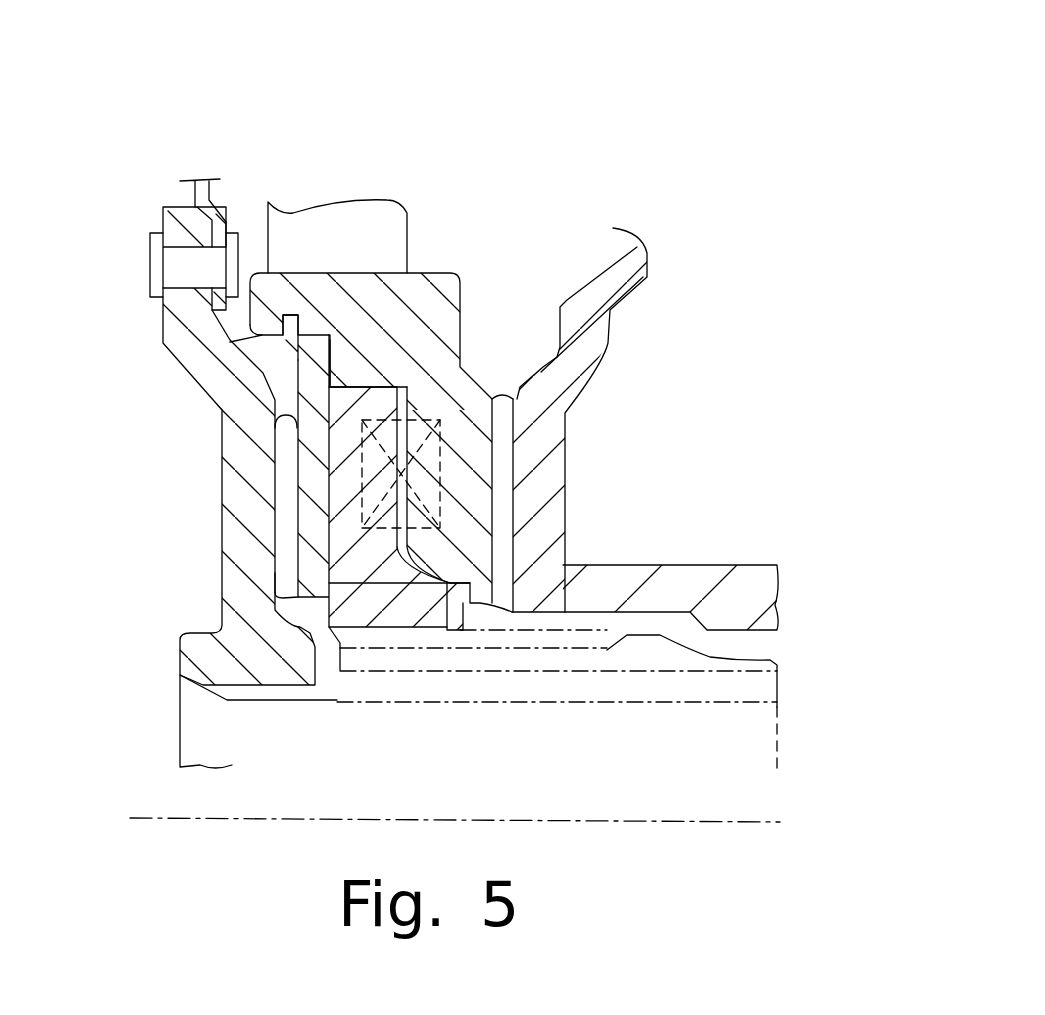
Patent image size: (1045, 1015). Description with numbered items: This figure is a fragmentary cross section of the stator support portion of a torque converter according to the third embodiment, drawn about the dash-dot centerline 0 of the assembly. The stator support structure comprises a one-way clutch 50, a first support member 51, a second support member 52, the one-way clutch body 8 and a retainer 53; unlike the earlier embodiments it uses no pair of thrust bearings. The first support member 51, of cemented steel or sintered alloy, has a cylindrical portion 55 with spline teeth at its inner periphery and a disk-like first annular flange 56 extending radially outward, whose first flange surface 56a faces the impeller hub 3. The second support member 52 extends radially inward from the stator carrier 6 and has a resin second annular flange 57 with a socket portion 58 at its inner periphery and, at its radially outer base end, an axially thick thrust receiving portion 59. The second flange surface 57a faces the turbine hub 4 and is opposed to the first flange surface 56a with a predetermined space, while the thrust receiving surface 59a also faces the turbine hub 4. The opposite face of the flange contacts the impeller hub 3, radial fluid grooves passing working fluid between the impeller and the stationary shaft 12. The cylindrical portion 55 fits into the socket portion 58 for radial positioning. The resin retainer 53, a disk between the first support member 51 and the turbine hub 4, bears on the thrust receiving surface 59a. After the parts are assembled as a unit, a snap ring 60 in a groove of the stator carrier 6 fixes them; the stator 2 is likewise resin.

The axis of rotation 0 is at (455, 821).
The stator 2 is at (296, 222).
The impeller hub 3 is at (593, 343).
The turbine hub 4 is at (183, 222).
The stator carrier 6 is at (230, 342).
The one-way clutch body 8 is at (400, 470).
The stationary shaft 12 is at (763, 668).
The one-way clutch 50 is at (481, 230).
The first support member 51 is at (320, 601).
The second support member 52 is at (476, 348).
The retainer 53 is at (313, 540).
The cylindrical portion 55 is at (400, 620).
The first annular flange 56 is at (342, 487).
The first flange surface 56a is at (397, 555).
The second annular flange 57 is at (483, 470).
The second flange surface 57a is at (367, 517).
The socket portion 58 is at (448, 630).
The thrust receiving portion 59 is at (433, 274).
The thrust receiving surface 59a is at (332, 360).
The snap ring 60 is at (278, 364).